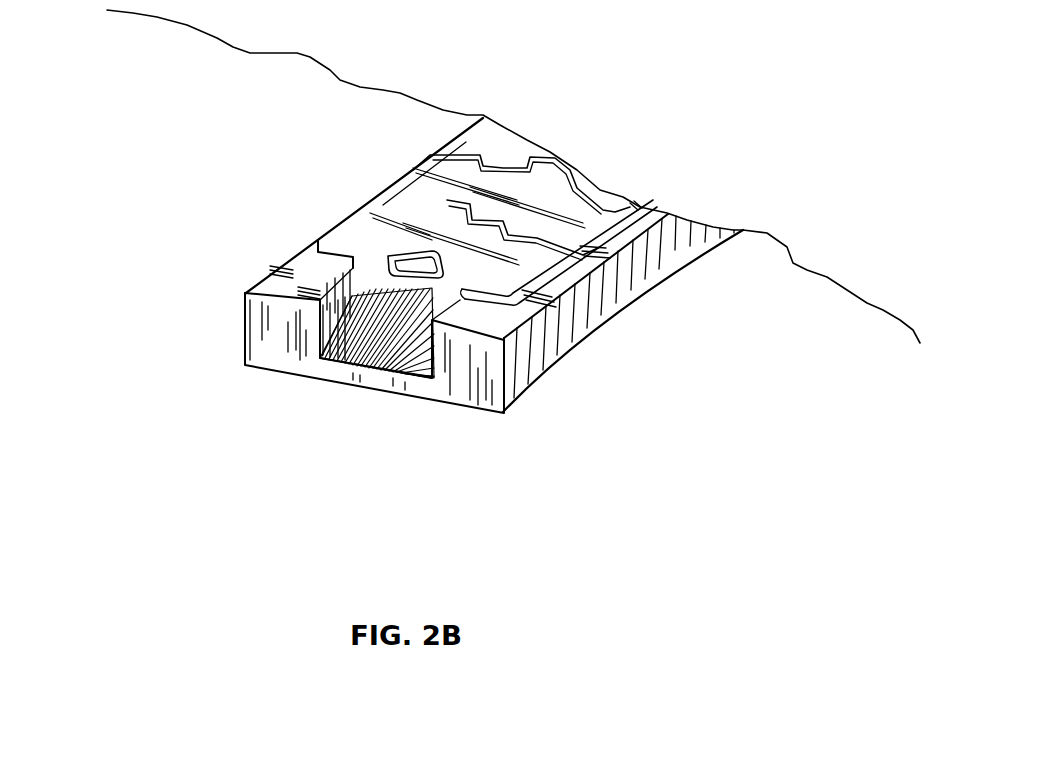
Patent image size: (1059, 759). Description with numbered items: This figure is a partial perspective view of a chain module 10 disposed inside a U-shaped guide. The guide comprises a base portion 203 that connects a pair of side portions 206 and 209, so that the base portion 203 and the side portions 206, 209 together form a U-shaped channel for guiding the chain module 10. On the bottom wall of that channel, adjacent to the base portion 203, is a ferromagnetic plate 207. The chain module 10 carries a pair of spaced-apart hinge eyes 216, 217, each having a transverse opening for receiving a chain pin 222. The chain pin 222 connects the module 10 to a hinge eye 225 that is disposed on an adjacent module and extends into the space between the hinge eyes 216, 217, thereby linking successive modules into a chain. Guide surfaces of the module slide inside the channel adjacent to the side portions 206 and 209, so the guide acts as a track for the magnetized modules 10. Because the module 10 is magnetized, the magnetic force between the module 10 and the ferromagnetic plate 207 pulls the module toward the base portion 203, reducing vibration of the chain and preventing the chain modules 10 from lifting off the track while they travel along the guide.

The chain module 10 is at (495, 280).
The base portion 203 is at (372, 380).
The side portion 206 is at (267, 353).
The ferromagnetic plate 207 is at (348, 385).
The side portion 209 is at (470, 392).
The hinge eye 216 is at (365, 263).
The hinge eye 217 is at (515, 315).
The chain pin 222 is at (520, 393).
The hinge eye 225 is at (471, 219).